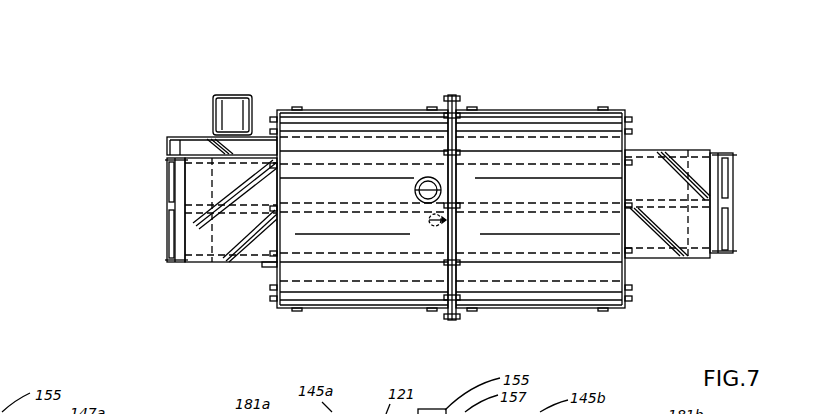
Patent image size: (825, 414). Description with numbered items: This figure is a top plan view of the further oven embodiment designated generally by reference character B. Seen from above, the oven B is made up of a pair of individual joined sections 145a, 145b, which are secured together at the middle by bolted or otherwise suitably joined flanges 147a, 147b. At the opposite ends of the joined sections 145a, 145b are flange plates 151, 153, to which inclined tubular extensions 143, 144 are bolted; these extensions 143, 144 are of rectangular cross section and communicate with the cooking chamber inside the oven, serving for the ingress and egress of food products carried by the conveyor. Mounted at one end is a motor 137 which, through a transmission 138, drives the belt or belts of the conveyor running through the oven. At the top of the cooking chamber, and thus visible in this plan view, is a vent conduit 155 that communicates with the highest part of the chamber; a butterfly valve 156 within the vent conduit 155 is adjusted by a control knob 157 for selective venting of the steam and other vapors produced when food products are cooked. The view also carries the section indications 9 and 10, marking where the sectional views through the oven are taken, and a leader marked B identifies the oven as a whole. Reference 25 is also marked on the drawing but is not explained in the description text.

The left frame extension 25 is at (165, 211).
The motor 137 is at (215, 96).
The transmission 138 is at (172, 138).
The inclined tubular extension 143 is at (200, 242).
The inclined tubular extension 144 is at (697, 165).
The joined section 145a is at (353, 106).
The joined section 145b is at (580, 97).
The flange 147a is at (443, 290).
The flange 147b is at (458, 290).
The flange plate 151 is at (277, 270).
The flange plate 153 is at (628, 140).
The vent conduit 155 is at (441, 186).
The butterfly valve 156 is at (422, 202).
The control knob 157 is at (444, 192).
The section line 9 is at (199, 233).
The section line 10 is at (534, 168).
The oven B is at (667, 310).